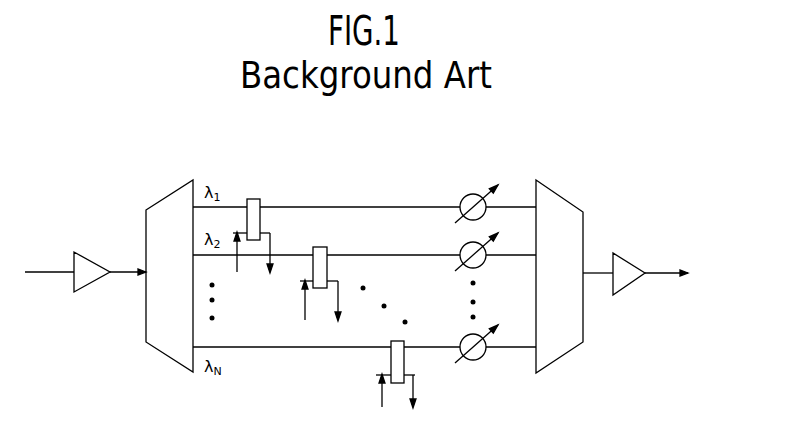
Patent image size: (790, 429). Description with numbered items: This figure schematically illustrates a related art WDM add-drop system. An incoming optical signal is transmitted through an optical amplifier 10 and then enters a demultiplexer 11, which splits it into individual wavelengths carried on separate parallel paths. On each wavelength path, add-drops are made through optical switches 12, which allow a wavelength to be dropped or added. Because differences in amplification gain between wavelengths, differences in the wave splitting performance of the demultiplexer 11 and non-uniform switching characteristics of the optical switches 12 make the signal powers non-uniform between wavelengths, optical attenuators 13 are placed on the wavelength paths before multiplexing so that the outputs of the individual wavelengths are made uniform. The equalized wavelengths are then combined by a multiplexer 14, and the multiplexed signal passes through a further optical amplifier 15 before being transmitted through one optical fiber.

The optical amplifier 10 is at (75, 285).
The demultiplexer 11 is at (167, 203).
The optical switches 12 is at (258, 209).
The optical attenuators 13 is at (462, 196).
The multiplexer 14 is at (563, 207).
The output optical amplifier 15 is at (637, 265).